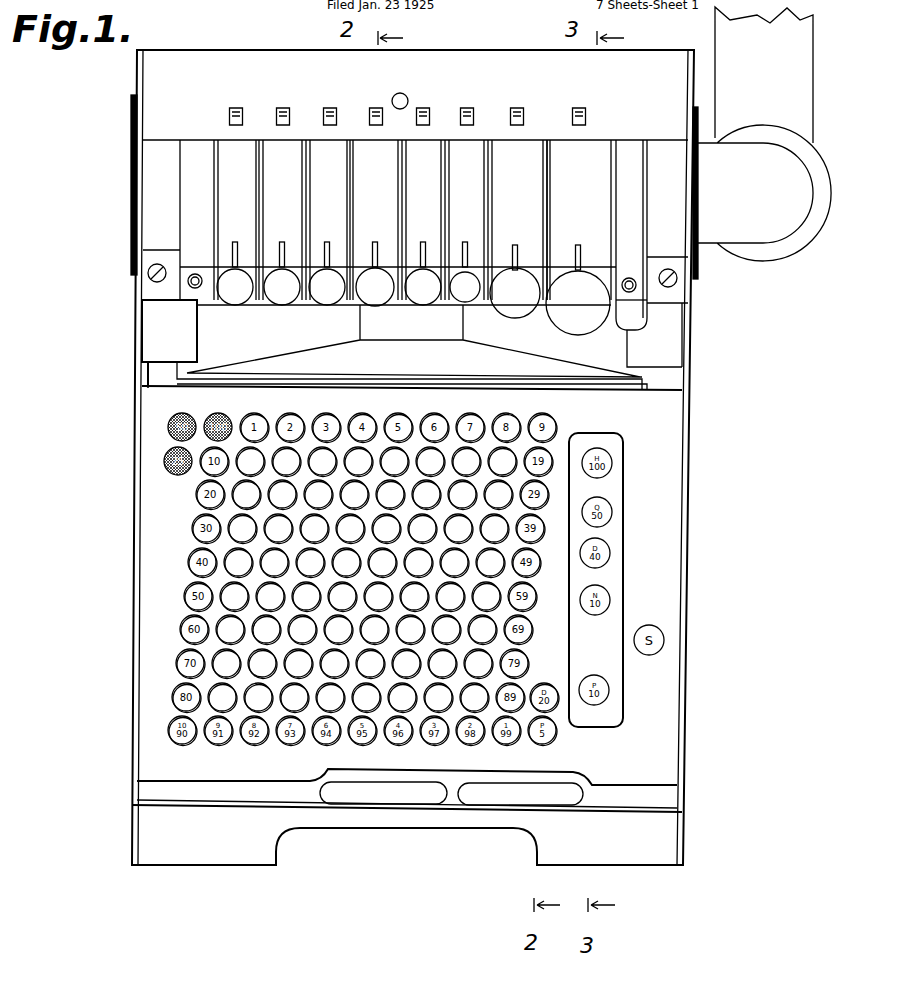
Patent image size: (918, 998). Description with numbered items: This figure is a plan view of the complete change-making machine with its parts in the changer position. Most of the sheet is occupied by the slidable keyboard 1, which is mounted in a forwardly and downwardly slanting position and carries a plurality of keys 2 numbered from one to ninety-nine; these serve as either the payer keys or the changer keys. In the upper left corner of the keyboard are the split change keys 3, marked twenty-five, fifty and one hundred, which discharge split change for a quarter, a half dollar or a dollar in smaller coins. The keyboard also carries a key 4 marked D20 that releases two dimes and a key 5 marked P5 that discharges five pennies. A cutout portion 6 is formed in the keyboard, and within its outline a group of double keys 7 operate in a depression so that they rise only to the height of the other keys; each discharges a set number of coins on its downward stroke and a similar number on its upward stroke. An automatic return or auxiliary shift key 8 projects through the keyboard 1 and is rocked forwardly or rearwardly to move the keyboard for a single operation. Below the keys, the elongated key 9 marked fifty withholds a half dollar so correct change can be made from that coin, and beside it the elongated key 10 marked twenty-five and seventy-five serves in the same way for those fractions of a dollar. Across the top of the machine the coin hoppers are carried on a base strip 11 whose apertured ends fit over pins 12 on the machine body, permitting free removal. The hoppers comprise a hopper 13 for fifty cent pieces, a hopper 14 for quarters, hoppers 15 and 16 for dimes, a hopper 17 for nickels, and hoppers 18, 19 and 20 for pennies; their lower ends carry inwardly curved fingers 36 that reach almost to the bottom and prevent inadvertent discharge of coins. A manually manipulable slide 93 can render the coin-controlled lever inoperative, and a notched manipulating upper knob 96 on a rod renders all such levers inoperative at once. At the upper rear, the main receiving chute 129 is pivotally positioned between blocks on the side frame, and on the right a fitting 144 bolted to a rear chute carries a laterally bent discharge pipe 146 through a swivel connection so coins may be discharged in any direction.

The slidable keyboard 1 is at (150, 580).
The keys 2 is at (176, 629).
The split change keys 3 is at (160, 438).
The key 4 is at (557, 708).
The key 5 is at (555, 741).
The cutout portion 6 is at (612, 657).
The double keys 7 is at (609, 594).
The automatic return or auxiliary shift key 8 is at (664, 631).
The elongated key 9 is at (500, 791).
The indicator window 10 is at (388, 790).
The base strip 11 is at (630, 318).
The pins 12 is at (634, 296).
The hopper 13 is at (592, 171).
The hopper 14 is at (520, 171).
The hopper 15 is at (472, 168).
The hopper 16 is at (433, 162).
The hopper 17 is at (367, 162).
The hopper 18 is at (325, 157).
The hopper 19 is at (279, 165).
The hopper 20 is at (228, 165).
The inwardly curved fingers 36 is at (553, 331).
The manually manipulable slide 93 is at (584, 106).
The notched manipulating upper knob 96 is at (406, 94).
The main receiving chute 129 is at (258, 332).
The fitting 144 is at (781, 208).
The discharge pipe 146 is at (764, 75).